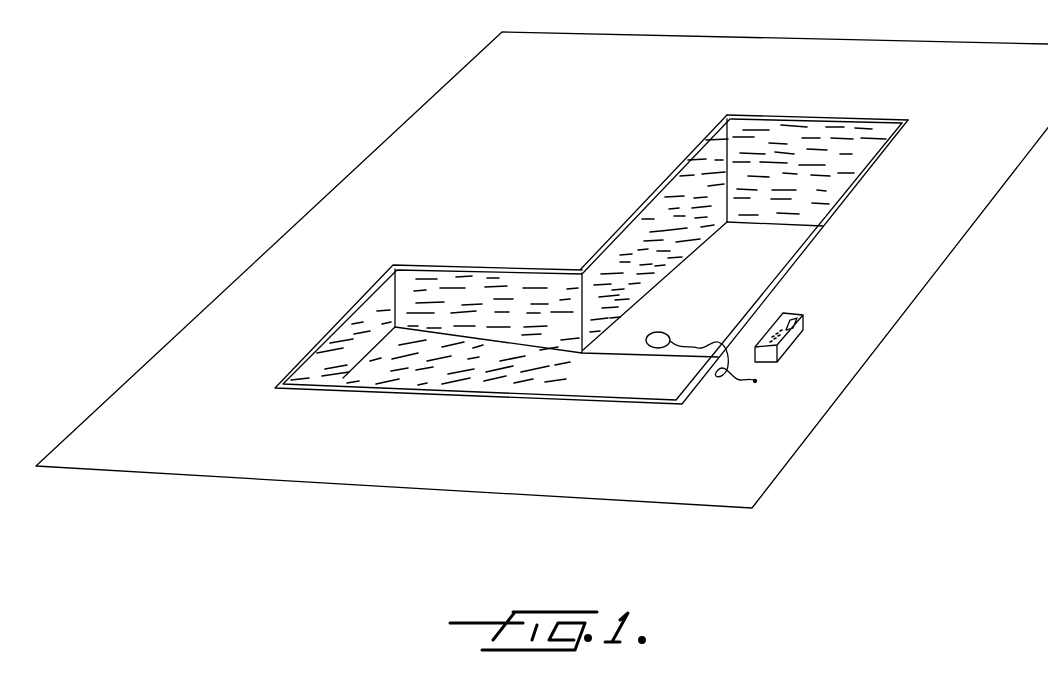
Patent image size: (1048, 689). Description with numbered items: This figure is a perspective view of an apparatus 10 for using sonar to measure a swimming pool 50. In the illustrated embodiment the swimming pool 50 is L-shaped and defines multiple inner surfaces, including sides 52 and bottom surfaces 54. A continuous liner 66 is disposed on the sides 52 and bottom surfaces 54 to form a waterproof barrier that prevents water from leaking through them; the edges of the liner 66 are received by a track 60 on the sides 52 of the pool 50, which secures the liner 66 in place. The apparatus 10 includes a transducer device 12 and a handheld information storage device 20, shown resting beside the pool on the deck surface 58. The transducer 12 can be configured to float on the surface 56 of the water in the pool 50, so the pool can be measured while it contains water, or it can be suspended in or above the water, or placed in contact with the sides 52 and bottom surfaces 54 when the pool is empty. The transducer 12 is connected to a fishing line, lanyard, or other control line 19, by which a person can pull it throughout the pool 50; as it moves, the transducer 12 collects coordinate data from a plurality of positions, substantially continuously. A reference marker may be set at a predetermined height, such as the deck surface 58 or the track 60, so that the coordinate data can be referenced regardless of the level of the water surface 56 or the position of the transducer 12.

The apparatus 10 is at (542, 325).
The transducer device 12 is at (674, 318).
The control line 19 is at (697, 358).
The handheld information storage device 20 is at (835, 347).
The swimming pool 50 is at (612, 226).
The sides 52 is at (797, 158).
The bottom surfaces 54 is at (790, 227).
The surface of the water 56 is at (705, 157).
The deck surface 58 is at (700, 455).
The track 60 is at (762, 113).
The continuous liner 66 is at (875, 128).